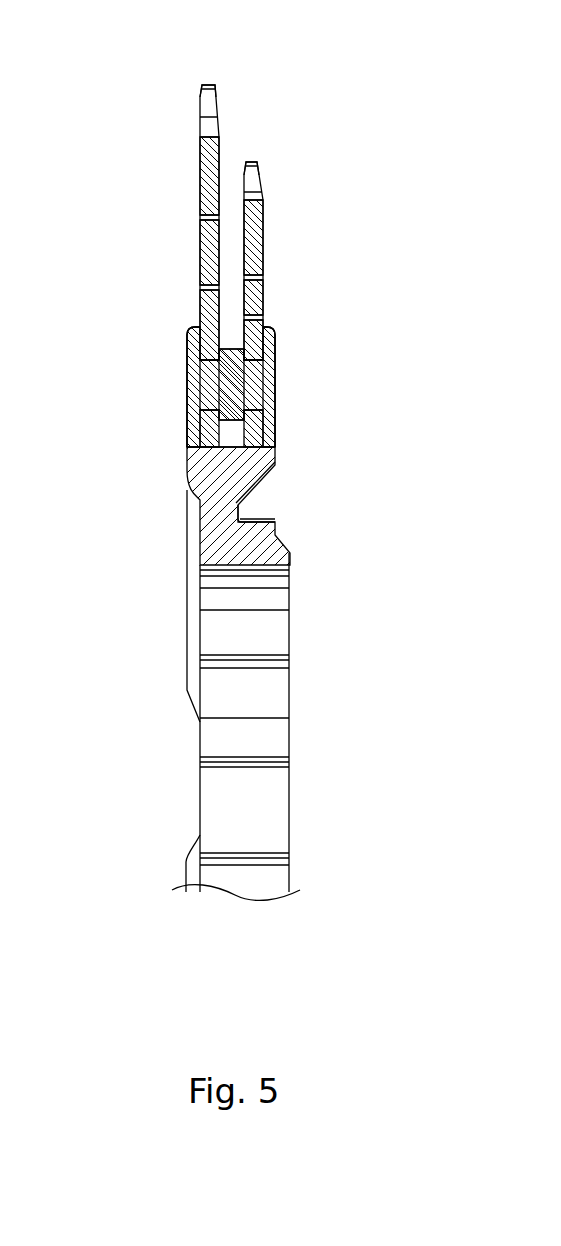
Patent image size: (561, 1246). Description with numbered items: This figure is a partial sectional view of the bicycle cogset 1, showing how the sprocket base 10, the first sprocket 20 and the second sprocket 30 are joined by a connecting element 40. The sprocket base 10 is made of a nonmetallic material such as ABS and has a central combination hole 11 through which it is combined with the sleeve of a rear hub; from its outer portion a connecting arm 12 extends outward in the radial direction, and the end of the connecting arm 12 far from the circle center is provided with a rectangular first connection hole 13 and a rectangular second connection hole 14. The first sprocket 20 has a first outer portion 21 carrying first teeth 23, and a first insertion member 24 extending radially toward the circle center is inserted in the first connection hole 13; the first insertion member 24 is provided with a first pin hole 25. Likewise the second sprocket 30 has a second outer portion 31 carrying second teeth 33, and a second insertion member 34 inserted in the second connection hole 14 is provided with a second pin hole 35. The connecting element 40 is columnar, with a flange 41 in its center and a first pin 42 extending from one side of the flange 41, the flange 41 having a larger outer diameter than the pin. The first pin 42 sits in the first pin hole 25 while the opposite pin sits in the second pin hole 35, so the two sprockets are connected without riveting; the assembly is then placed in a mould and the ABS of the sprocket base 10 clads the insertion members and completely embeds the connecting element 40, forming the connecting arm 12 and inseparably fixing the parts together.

The cogset 1 is at (158, 532).
The sprocket base 10 is at (250, 552).
The combination hole 11 is at (273, 810).
The connecting arm 12 is at (270, 372).
The first connection hole 13 is at (190, 336).
The second connection hole 14 is at (272, 330).
The first sprocket 20 is at (196, 160).
The first outer portion 21 is at (200, 83).
The first teeth 23 is at (208, 108).
The first insertion member 24 is at (205, 310).
The first pin hole 25 is at (188, 428).
The second sprocket 30 is at (257, 228).
The second outer portion 31 is at (255, 158).
The second teeth 33 is at (260, 175).
The second insertion member 34 is at (265, 322).
The second pin hole 35 is at (265, 432).
The connecting element 40 is at (225, 383).
The flange 41 is at (203, 395).
The first pin 42 is at (268, 408).